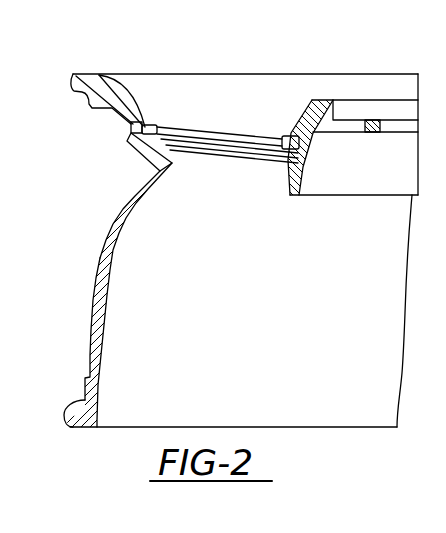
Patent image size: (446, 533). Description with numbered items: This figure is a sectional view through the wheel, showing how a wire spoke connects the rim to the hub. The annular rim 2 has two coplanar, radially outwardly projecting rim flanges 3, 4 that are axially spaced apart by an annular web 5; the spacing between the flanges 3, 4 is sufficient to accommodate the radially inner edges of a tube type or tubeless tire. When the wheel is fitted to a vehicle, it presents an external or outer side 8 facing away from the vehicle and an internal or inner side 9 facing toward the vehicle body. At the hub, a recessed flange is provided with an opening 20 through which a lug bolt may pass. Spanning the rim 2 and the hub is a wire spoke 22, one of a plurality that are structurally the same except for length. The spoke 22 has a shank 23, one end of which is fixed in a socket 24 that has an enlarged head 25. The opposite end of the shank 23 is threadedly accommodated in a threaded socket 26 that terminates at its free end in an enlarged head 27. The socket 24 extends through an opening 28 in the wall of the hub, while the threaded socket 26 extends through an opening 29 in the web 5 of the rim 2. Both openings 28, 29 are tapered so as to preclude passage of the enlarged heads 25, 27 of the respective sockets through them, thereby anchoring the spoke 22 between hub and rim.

The annular rim 2 is at (107, 237).
The rim flange 3 is at (71, 75).
The rim flange 4 is at (63, 412).
The annular web 5 is at (92, 304).
The external or outer side 8 is at (85, 75).
The internal or inner side 9 is at (82, 429).
The opening 20 is at (350, 133).
The wire spoke 22 is at (200, 155).
The shank 23 is at (250, 136).
The socket 24 is at (290, 130).
The enlarged head 25 is at (313, 133).
The threaded socket 26 is at (148, 125).
The enlarged head 27 is at (134, 134).
The opening 28 is at (288, 161).
The opening 29 is at (130, 126).